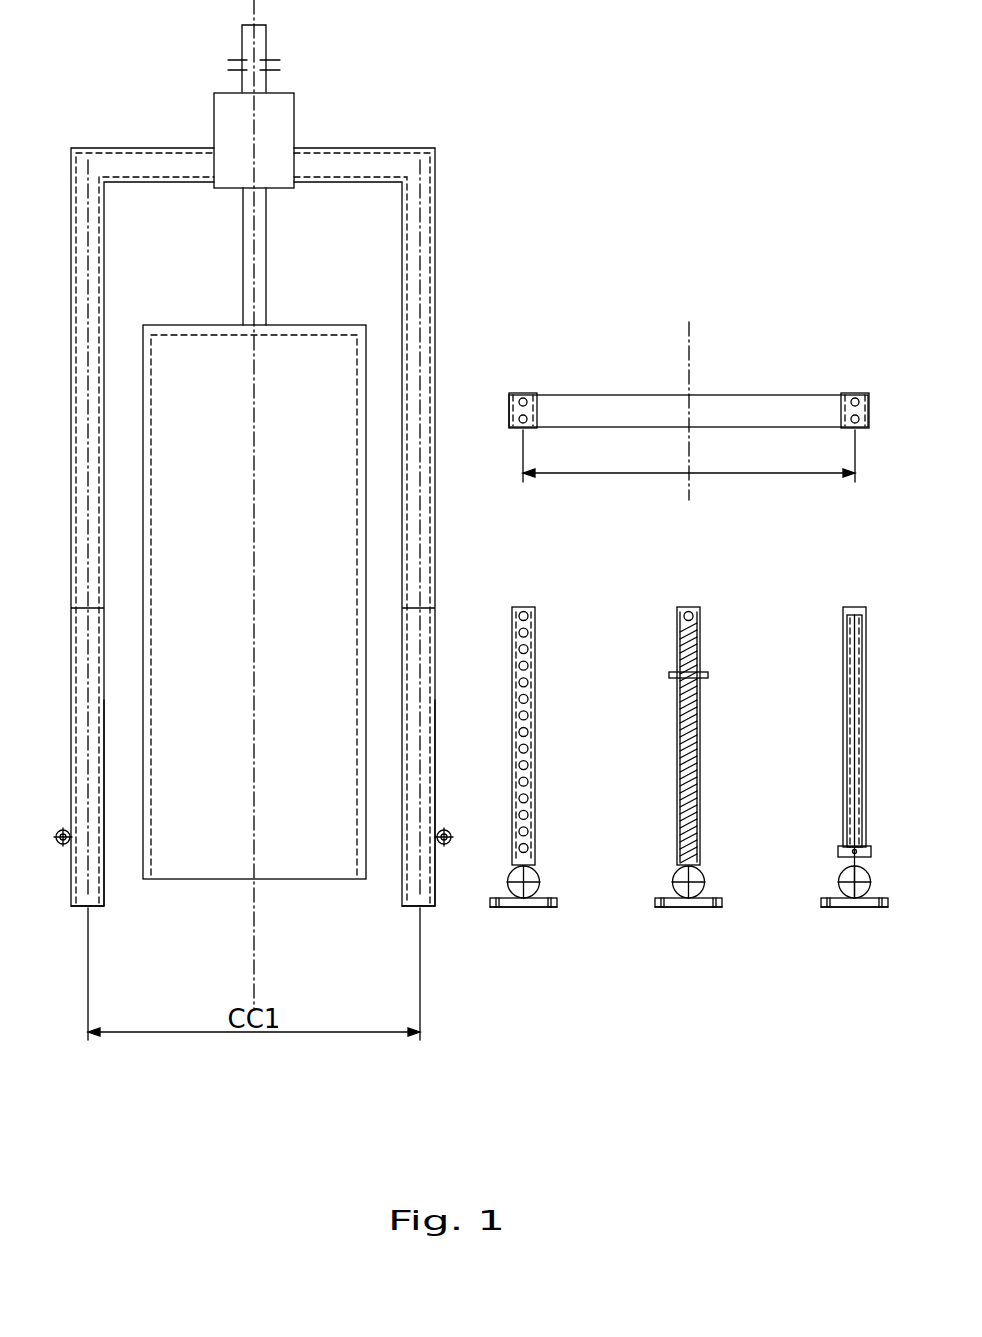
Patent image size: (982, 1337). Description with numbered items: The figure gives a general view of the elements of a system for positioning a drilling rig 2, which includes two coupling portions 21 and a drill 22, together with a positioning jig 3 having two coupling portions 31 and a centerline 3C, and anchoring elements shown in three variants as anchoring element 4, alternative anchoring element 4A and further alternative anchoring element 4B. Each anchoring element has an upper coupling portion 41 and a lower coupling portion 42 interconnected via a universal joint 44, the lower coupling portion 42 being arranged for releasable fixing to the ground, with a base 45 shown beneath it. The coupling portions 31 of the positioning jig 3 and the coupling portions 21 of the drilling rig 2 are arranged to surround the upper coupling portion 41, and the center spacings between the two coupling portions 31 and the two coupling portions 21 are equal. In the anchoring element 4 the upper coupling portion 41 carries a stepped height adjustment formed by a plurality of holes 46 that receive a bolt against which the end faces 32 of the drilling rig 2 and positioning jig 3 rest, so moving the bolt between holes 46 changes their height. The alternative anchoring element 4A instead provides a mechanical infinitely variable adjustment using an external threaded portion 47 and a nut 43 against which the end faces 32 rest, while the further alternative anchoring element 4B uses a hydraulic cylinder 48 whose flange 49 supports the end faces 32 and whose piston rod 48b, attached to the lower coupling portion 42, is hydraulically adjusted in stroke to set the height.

The drilling rig 2 is at (436, 215).
The coupling portion 21 is at (99, 906).
The drill 22 is at (365, 325).
The positioning jig 3 is at (575, 395).
The coupling portion 31 is at (514, 395).
The end face 32 is at (515, 428).
The center line 3C is at (689, 395).
The anchoring element 4 is at (530, 689).
The anchoring element 4A is at (650, 689).
The anchoring element 4B is at (833, 705).
The upper coupling portion 41 is at (535, 697).
The lower coupling portion 42 is at (556, 898).
The nut 43 is at (680, 675).
The universal joint 44 is at (539, 887).
The base mounting 45 is at (550, 907).
The holes 46 is at (523, 668).
The external threaded portion 47 is at (680, 765).
The hydraulic cylinder 48 is at (845, 705).
The piston rod 48b is at (845, 750).
The flange 49 is at (868, 848).